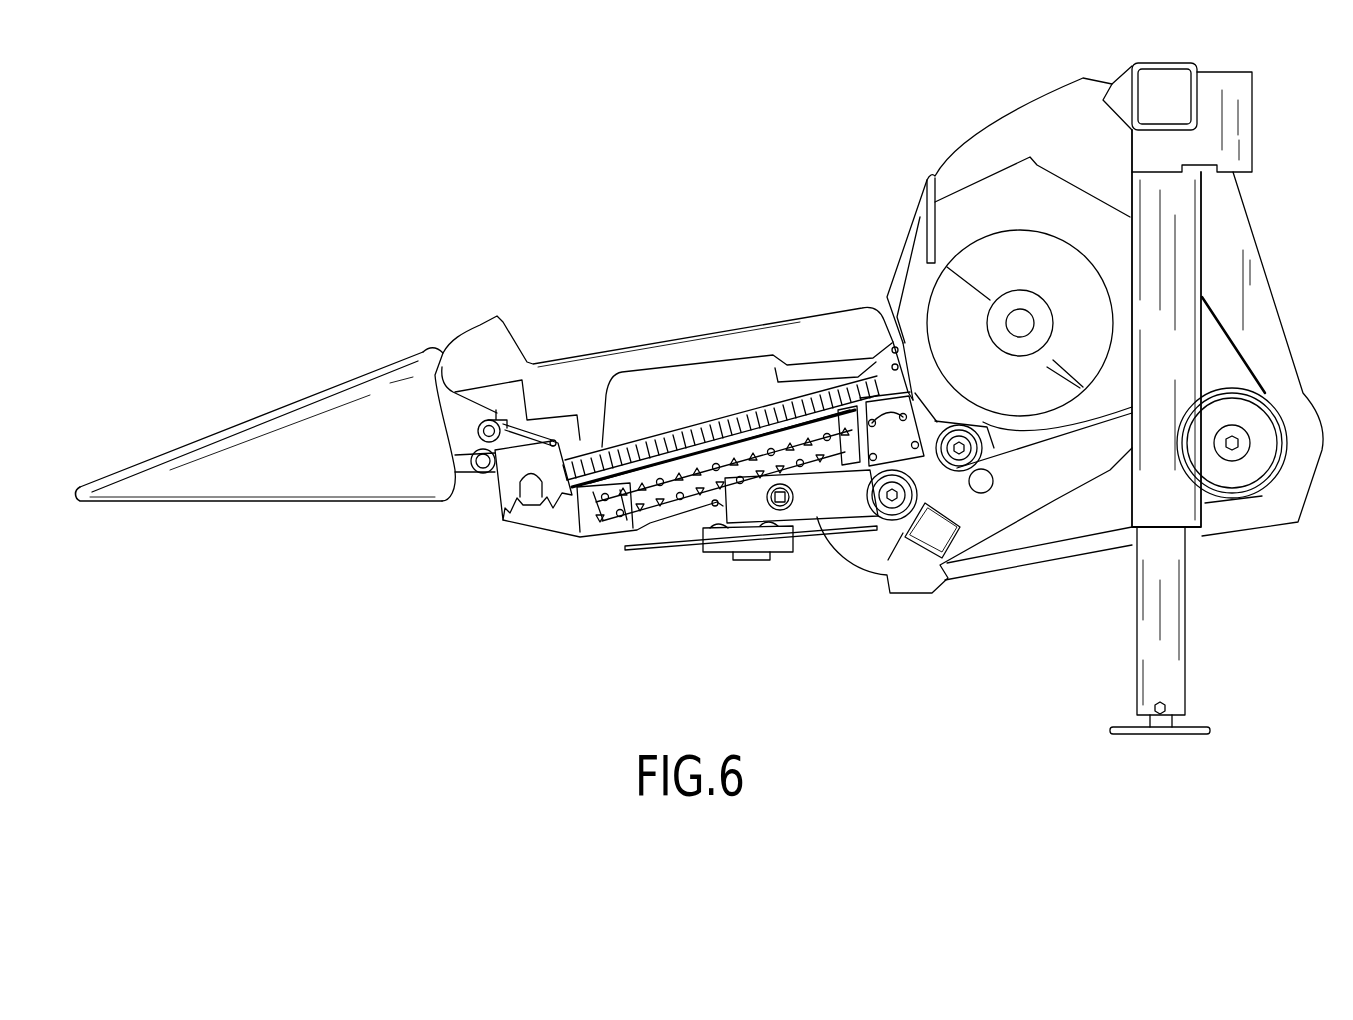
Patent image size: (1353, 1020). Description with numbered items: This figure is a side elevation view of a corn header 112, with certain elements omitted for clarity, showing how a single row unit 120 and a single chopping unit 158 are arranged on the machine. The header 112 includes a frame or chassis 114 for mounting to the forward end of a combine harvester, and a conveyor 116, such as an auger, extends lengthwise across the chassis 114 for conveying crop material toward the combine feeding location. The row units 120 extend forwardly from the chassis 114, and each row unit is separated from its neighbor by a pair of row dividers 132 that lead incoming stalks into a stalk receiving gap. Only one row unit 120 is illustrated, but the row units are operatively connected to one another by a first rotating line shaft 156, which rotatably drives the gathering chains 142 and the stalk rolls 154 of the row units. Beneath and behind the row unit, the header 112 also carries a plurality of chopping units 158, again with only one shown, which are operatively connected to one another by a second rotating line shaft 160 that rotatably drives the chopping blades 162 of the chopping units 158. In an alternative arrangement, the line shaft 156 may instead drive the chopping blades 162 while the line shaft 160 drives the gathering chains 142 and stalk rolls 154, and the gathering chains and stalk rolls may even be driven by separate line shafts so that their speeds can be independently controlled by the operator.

The header 112 is at (640, 196).
The frame or chassis 114 is at (1252, 118).
The conveyor 116 is at (1042, 230).
The row unit 120 is at (488, 541).
The row divider 132 is at (343, 378).
The gathering chain 142 is at (697, 430).
The stalk roll 154 is at (627, 505).
The line shaft 156 is at (958, 470).
The chopping unit 158 is at (757, 575).
The line shaft 160 is at (887, 523).
The chopping blade 162 is at (675, 543).